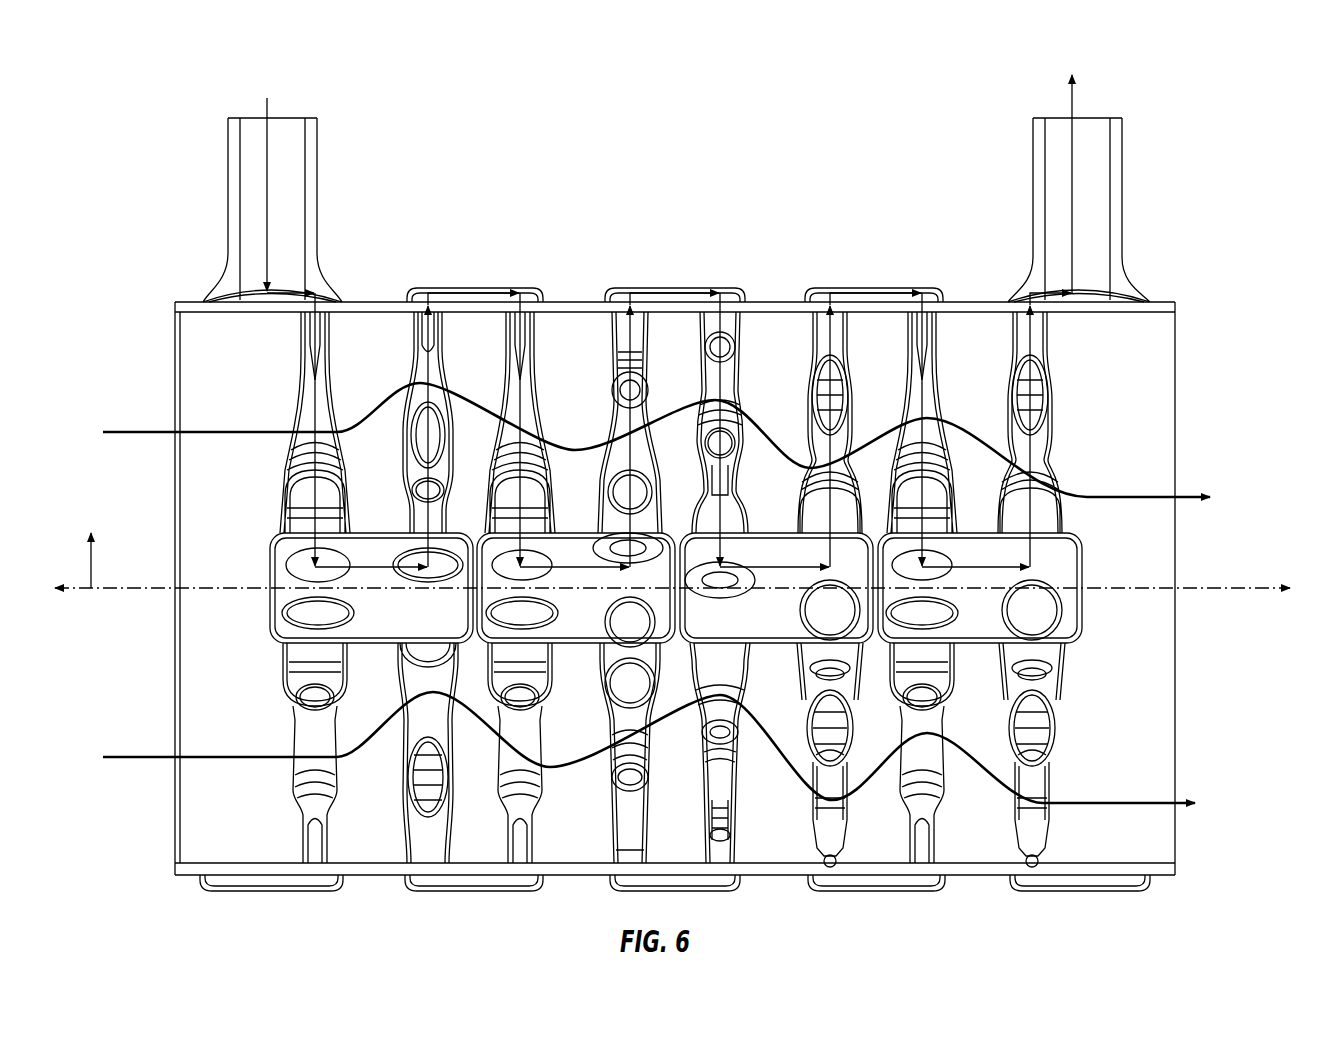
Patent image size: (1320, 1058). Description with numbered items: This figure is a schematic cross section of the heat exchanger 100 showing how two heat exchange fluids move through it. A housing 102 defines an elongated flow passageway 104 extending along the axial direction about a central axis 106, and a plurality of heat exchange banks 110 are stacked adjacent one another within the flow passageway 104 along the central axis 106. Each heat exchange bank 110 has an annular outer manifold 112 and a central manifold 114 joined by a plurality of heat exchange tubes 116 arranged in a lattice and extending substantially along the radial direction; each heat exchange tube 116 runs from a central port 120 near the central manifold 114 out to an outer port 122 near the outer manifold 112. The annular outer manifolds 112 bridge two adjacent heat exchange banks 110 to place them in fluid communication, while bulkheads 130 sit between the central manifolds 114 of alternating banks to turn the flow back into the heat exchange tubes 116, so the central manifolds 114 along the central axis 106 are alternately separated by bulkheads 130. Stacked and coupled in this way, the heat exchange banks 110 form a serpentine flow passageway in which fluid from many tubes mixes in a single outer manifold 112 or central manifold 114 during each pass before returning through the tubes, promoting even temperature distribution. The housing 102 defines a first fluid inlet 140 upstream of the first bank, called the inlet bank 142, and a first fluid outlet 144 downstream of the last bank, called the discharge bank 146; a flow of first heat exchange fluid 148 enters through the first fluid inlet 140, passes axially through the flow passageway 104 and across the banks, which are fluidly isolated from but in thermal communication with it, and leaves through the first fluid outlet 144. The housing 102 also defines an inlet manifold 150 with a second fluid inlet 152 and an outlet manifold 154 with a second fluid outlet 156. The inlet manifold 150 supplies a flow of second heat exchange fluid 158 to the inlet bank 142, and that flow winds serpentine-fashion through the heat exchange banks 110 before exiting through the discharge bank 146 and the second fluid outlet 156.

The heat exchanger 100 is at (197, 74).
The housing 102 is at (378, 300).
The flow passageway 104 is at (207, 380).
The central axis 106 is at (201, 590).
The heat exchange bank 110 is at (611, 367).
The annular outer manifold 112 is at (470, 286).
The central manifold 114 is at (387, 611).
The heat exchange tube 116 is at (731, 387).
The central port 120 is at (302, 562).
The outer port 122 is at (715, 293).
The bulkhead 130 is at (400, 865).
The first fluid inlet 140 is at (174, 797).
The inlet bank 142 is at (296, 774).
The first fluid outlet 144 is at (1181, 740).
The discharge bank 146 is at (1056, 824).
The flow of first heat exchange fluid 148 is at (145, 432).
The inlet manifold 150 is at (228, 207).
The second fluid inlet 152 is at (302, 109).
The outlet manifold 154 is at (1122, 182).
The second fluid outlet 156 is at (1097, 113).
The flow of second heat exchange fluid 158 is at (1073, 183).